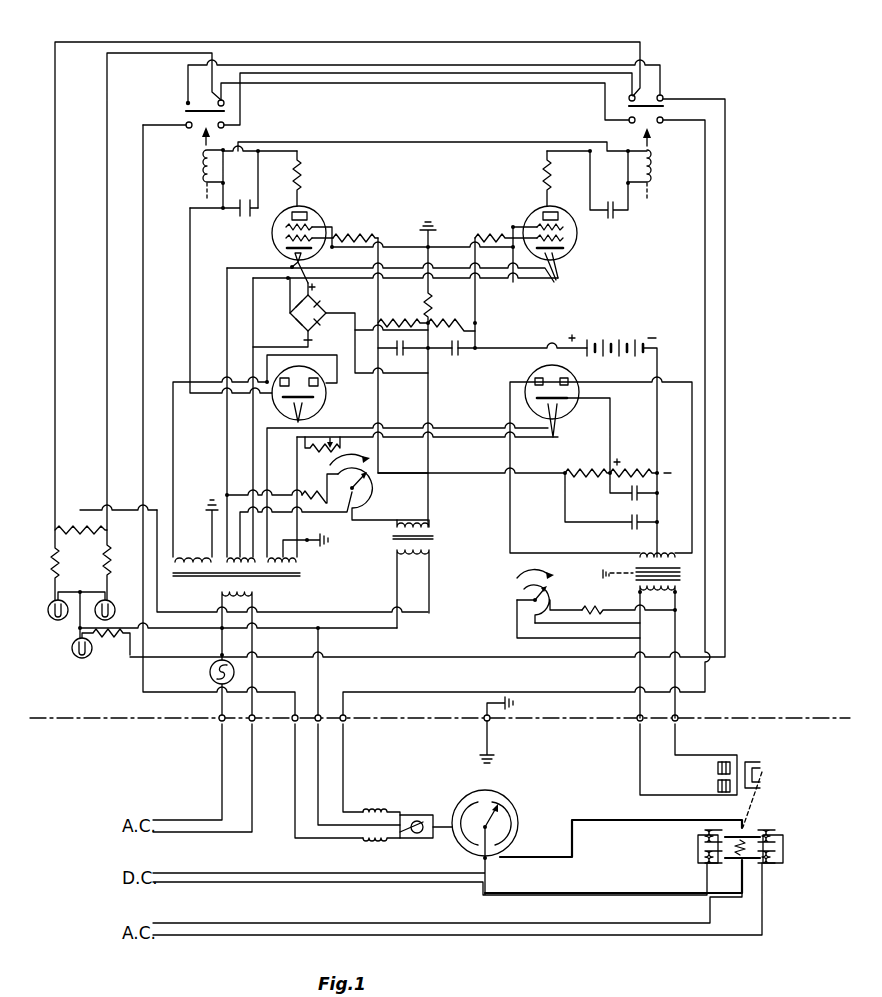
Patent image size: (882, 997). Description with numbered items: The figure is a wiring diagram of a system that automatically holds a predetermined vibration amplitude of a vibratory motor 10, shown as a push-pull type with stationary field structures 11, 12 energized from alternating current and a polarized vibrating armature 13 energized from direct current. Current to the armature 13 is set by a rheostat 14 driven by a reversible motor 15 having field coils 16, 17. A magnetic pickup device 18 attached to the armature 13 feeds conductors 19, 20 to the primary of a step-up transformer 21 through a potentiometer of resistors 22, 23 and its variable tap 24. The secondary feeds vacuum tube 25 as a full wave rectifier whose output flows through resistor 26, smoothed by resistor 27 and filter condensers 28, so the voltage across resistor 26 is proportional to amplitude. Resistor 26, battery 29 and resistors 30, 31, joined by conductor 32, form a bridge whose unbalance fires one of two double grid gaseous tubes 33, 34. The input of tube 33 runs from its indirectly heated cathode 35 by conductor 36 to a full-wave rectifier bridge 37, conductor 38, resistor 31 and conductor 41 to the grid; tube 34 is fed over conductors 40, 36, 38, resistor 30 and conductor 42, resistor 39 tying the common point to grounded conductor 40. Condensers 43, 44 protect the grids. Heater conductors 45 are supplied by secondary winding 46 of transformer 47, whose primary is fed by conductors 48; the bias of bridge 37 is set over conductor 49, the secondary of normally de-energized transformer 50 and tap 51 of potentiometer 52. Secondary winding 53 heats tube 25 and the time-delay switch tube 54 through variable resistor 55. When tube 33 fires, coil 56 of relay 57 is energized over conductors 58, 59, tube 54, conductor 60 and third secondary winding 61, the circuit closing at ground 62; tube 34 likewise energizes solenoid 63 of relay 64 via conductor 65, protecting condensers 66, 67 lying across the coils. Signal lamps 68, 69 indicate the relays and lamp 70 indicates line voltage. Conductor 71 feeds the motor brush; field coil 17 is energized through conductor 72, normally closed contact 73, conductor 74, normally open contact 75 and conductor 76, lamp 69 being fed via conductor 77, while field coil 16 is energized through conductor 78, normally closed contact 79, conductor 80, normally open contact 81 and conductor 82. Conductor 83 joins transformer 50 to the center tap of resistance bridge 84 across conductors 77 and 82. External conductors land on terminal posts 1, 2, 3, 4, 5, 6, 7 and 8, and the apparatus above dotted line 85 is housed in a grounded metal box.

The terminal 1 is at (679, 712).
The terminal 2 is at (644, 712).
The terminal 3 is at (496, 730).
The terminal 4 is at (347, 712).
The terminal 5 is at (322, 712).
The terminal 6 is at (299, 712).
The terminal 7 is at (256, 712).
The terminal 8 is at (226, 712).
The vibratory motor 10 is at (684, 860).
The stationary field structure 11 is at (698, 840).
The stationary field structure 12 is at (780, 834).
The polarized vibrating armature 13 is at (750, 862).
The rheostat 14 is at (513, 812).
The reversible motor 15 is at (437, 796).
The field coil 16 is at (376, 808).
The field coil 17 is at (372, 844).
The magnetic pickup device 18 is at (762, 757).
The conductor 19 is at (677, 675).
The conductor 20 is at (640, 674).
The step-up transformer 21 is at (688, 575).
The resistor 22 is at (516, 600).
The resistor 23 is at (598, 608).
The variable tap 24 is at (530, 604).
The vacuum tube 25 is at (552, 365).
The resistor 26 is at (628, 471).
The filter resistor 27 is at (583, 471).
The filter condensers 28 is at (630, 521).
The battery 29 is at (628, 333).
The resistor 30 is at (442, 322).
The resistor 31 is at (407, 320).
The conductor 32 is at (402, 471).
The double grid gaseous tube 33 is at (326, 225).
The double grid gaseous tube 34 is at (535, 215).
The indirectly heated cathode 35 is at (290, 250).
The conductor 36 is at (336, 259).
The full-wave rectifier bridge 37 is at (334, 304).
The conductor 38 is at (379, 328).
The resistor 39 is at (431, 303).
The common grounded conductor 40 is at (448, 245).
The conductor 41 is at (382, 259).
The conductor 42 is at (478, 302).
The condenser 43 is at (404, 353).
The condenser 44 is at (461, 349).
The pair of conductors 45 is at (253, 352).
The secondary winding 46 is at (236, 512).
The transformer 47 is at (310, 578).
The conductors 48 is at (252, 762).
The conductor 49 is at (434, 402).
The normally de-energized transformer 50 is at (440, 524).
The variable tap 51 is at (334, 483).
The potentiometer 52 is at (384, 488).
The secondary winding 53 is at (298, 558).
The double plate half-wave vacuum tube rectifier 54 is at (328, 398).
The variable resistor 55 is at (326, 447).
The coil 56 is at (203, 171).
The relay 57 is at (186, 146).
The conductor 58 is at (220, 206).
The conductor 59 is at (190, 341).
The conductor 60 is at (173, 456).
The third secondary winding 61 is at (198, 557).
The ground 62 is at (429, 222).
The solenoid 63 is at (654, 174).
The relay 64 is at (665, 142).
The conductor 65 is at (470, 141).
The protecting condenser 66 is at (247, 217).
The protecting condenser 67 is at (614, 214).
The signal lamp 68 is at (110, 600).
The signal lamp 69 is at (54, 619).
The signal lamp 70 is at (76, 658).
The conductor 71 is at (182, 630).
The conductor 72 is at (146, 292).
The normally closed contact 73 is at (188, 122).
The conductor 74 is at (440, 75).
The normally open contact 75 is at (650, 104).
The conductor 76 is at (727, 303).
The conductor 77 is at (55, 139).
The conductor 78 is at (708, 537).
The normally closed contact 79 is at (665, 118).
The conductor 80 is at (387, 86).
The normally open contact 81 is at (203, 108).
The conductor 82 is at (467, 64).
The conductor 83 is at (123, 510).
The resistance bridge 84 is at (105, 534).
The dotted line 85 is at (107, 721).